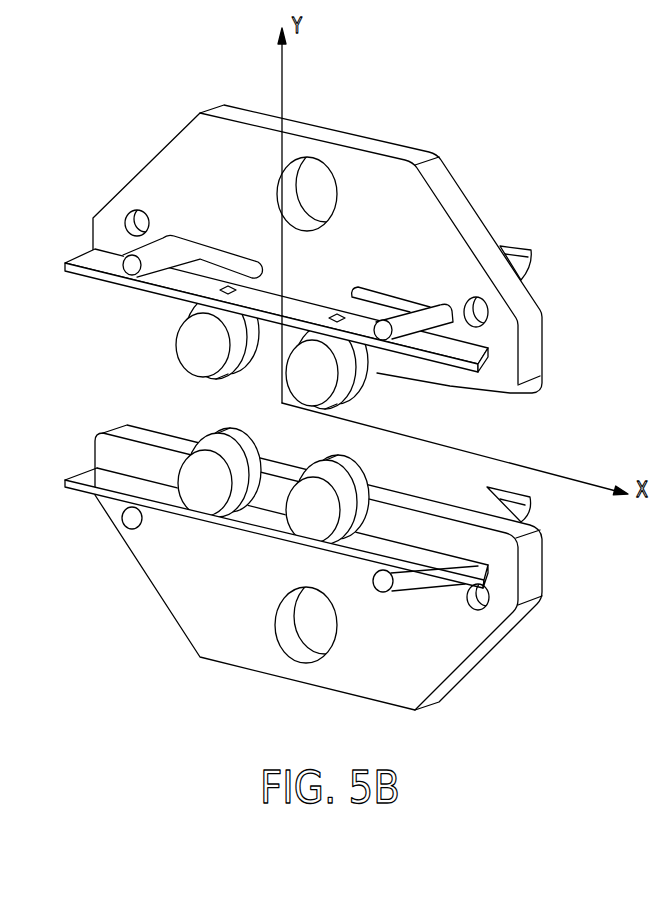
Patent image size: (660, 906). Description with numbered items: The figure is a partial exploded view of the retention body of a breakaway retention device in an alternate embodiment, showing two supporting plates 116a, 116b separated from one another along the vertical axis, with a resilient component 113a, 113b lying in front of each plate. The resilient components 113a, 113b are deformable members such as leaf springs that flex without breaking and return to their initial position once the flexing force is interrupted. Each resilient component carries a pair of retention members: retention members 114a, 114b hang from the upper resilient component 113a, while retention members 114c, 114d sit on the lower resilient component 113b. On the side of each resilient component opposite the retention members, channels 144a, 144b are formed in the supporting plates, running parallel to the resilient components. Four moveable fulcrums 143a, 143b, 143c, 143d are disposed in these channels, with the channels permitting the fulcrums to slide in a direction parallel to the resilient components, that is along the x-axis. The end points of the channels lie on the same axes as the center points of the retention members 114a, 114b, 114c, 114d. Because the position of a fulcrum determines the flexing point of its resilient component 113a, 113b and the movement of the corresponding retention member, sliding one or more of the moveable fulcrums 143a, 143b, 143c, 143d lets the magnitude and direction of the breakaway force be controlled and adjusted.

The resilient component 113a is at (488, 356).
The resilient component 113b is at (486, 572).
The retention member 114a is at (193, 340).
The retention member 114b is at (356, 390).
The retention member 114c is at (200, 470).
The retention member 114d is at (363, 517).
The supporting plate 116a is at (462, 223).
The supporting plate 116b is at (177, 583).
The moveable fulcrum 143a is at (110, 253).
The moveable fulcrum 143b is at (447, 312).
The moveable fulcrum 143c is at (132, 519).
The moveable fulcrum 143d is at (388, 583).
The channel 144a is at (229, 265).
The channel 144b is at (393, 310).